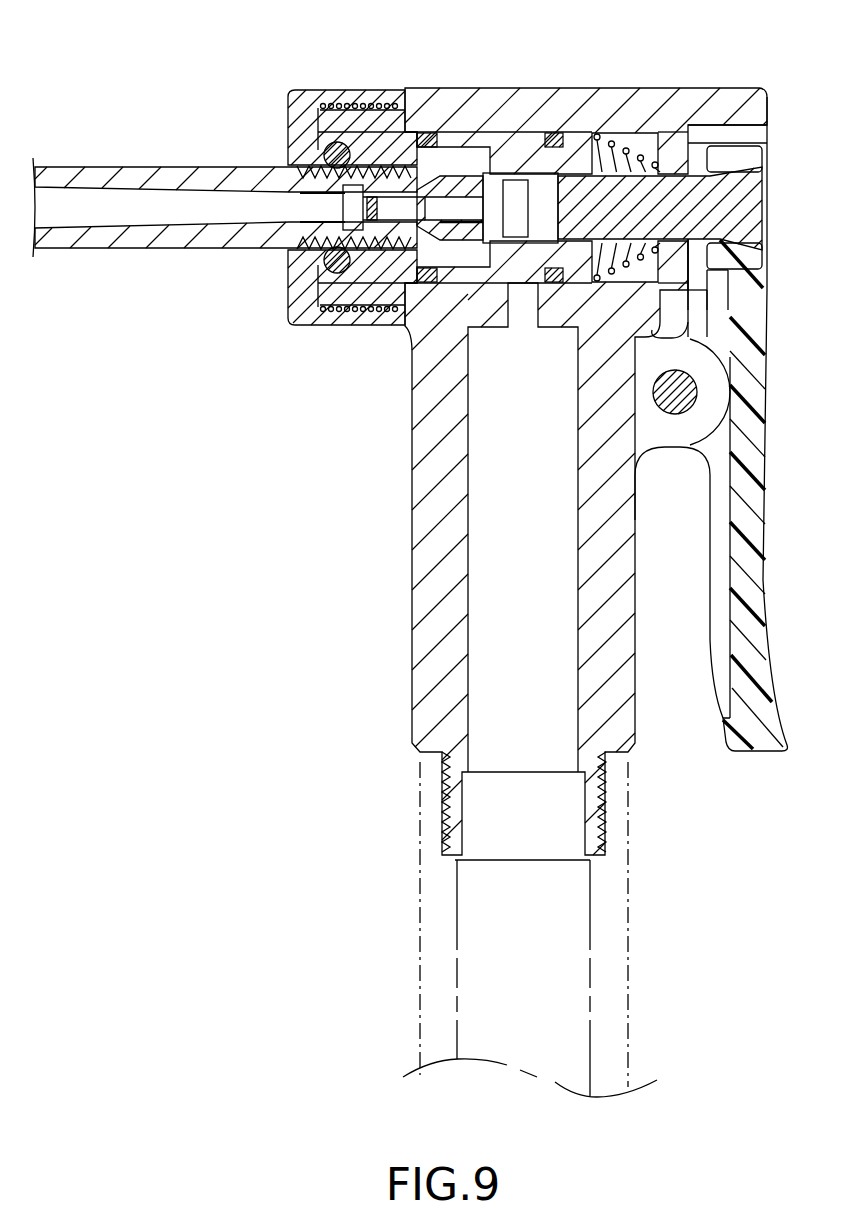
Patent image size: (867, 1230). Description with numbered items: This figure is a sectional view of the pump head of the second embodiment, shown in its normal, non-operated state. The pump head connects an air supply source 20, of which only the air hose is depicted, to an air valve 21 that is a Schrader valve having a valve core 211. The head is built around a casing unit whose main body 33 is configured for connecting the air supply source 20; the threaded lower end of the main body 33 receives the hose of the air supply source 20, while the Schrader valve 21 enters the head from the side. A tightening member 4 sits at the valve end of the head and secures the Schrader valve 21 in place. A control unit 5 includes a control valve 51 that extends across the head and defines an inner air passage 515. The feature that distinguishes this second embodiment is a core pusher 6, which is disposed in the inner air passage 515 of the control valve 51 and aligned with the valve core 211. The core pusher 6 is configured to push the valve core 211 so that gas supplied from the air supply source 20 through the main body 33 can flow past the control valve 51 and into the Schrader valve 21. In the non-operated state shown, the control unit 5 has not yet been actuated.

The nut 4 is at (333, 140).
The valve stem 6 is at (453, 187).
The valve seat member 515 is at (540, 190).
The piston 51 is at (575, 158).
The tube 21 is at (197, 250).
The tube bore 211 is at (318, 212).
The trigger 5 is at (780, 378).
The stem body 33 is at (422, 562).
The pipe 20 is at (628, 916).